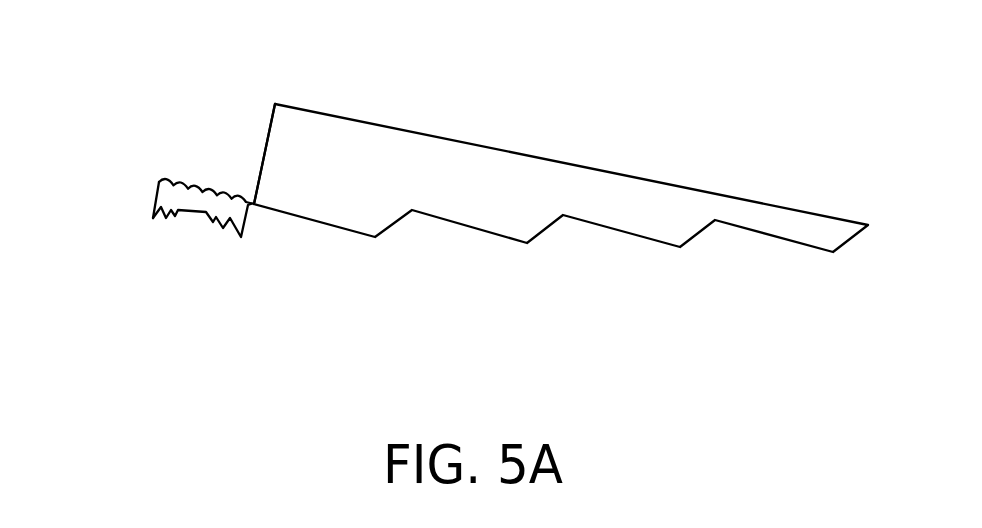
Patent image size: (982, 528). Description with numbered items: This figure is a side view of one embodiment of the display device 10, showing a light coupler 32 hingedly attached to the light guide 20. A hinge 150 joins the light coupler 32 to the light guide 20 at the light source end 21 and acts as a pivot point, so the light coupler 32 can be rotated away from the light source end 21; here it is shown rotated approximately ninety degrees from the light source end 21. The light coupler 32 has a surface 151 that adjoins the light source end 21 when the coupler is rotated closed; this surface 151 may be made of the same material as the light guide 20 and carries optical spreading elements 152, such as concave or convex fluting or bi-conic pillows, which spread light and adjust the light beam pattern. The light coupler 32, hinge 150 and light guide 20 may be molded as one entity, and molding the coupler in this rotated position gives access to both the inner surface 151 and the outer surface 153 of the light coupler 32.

The display device 10 is at (561, 148).
The light guide 20 is at (561, 178).
The light source end 21 is at (275, 96).
The light coupler 32 is at (173, 226).
The hinge 150 is at (165, 197).
The surface 151 is at (151, 182).
The optical spreading elements 152 is at (180, 183).
The outer surface 153 is at (165, 259).